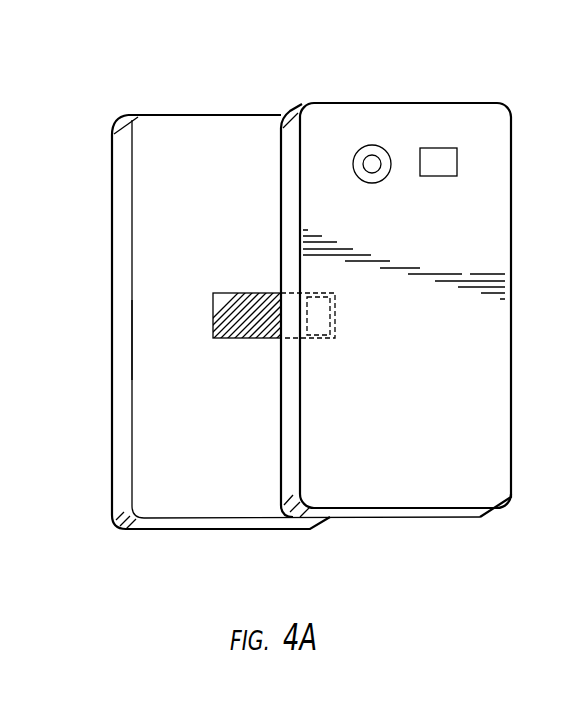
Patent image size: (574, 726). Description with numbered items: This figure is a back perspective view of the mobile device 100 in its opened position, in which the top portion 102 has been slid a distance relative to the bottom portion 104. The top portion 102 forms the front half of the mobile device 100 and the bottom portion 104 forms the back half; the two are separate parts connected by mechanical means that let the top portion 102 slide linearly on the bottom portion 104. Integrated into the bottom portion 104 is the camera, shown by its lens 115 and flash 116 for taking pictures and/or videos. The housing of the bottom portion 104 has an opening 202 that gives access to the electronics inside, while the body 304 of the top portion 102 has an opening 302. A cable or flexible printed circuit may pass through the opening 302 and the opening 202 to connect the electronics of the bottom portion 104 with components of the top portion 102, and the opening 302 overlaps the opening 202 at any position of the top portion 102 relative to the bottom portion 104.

The mobile device 100 is at (97, 89).
The top portion 102 is at (148, 500).
The bottom portion 104 is at (478, 110).
The lens 115 is at (375, 145).
The flash 116 is at (450, 148).
The opening 202 is at (320, 325).
The opening 302 is at (238, 285).
The body 304 is at (150, 360).